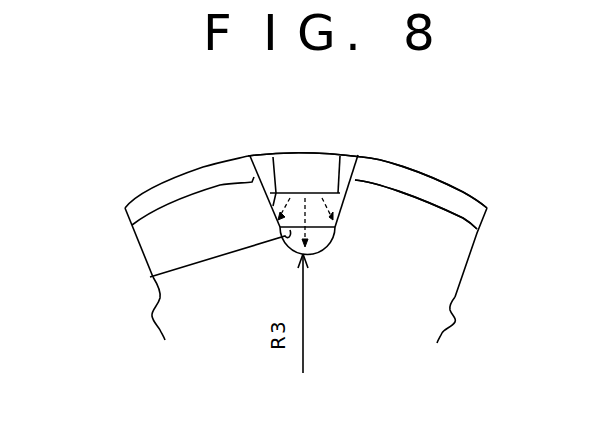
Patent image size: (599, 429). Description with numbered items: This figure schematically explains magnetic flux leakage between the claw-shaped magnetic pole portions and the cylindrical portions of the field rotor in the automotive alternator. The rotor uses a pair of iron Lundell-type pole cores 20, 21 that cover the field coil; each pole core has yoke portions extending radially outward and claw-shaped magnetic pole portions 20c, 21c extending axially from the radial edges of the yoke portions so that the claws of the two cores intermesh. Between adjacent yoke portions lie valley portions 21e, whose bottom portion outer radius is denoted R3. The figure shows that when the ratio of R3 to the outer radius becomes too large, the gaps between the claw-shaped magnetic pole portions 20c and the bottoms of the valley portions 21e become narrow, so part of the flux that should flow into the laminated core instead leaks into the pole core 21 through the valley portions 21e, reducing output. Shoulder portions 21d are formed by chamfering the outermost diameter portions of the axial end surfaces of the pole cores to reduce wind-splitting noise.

The pole core 20 is at (274, 151).
The claw-shaped magnetic pole portion 20c is at (331, 151).
The pole core 21 is at (465, 270).
The claw-shaped magnetic pole portion 21c is at (443, 181).
The shoulder portion 21d is at (460, 202).
The valley portion 21e is at (150, 277).